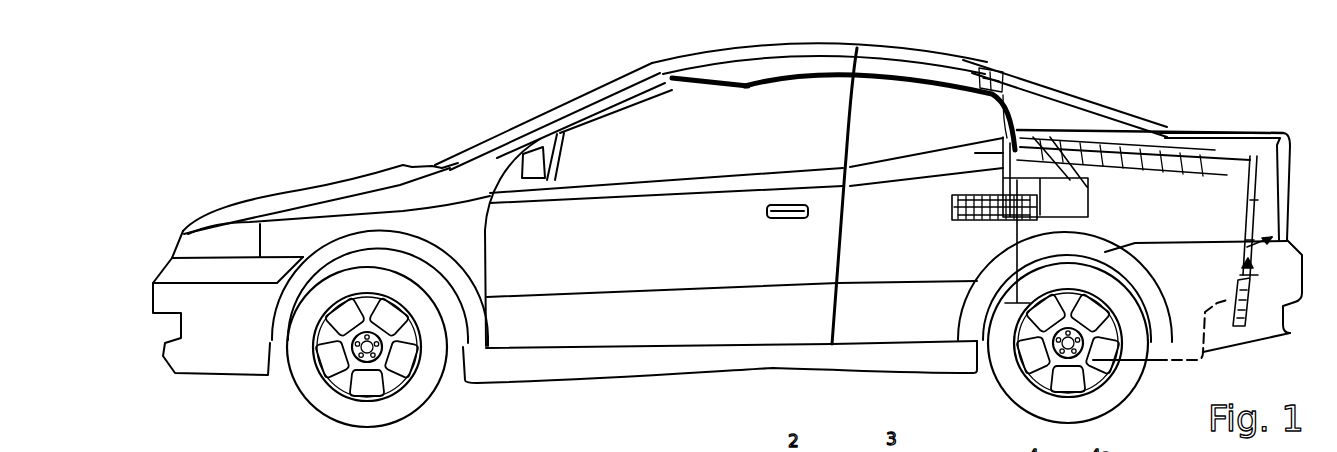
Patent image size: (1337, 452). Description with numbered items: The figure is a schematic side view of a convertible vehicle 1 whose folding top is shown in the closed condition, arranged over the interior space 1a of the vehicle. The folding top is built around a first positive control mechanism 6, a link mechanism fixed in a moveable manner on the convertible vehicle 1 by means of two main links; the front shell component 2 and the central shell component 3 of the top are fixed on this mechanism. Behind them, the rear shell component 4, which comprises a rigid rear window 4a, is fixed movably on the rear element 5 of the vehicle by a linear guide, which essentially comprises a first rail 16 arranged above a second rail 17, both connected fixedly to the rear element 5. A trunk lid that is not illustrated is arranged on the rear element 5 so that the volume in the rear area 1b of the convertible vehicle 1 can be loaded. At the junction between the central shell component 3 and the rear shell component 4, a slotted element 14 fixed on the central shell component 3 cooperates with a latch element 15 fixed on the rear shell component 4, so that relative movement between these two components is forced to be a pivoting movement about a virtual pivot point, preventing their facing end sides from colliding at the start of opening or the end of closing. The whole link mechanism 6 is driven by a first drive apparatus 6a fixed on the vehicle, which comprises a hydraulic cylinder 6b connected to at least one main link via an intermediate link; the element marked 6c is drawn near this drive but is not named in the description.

The convertible vehicle 1 is at (398, 143).
The interior space 1a is at (624, 158).
The rear area 1b is at (1226, 223).
The front shell component 2 is at (746, 82).
The central shell component 3 is at (897, 62).
The rear shell component 4 is at (1046, 108).
The rigid rear window 4a is at (1107, 111).
The rear element 5 is at (1275, 140).
The first positive control mechanism 6 is at (900, 95).
The first drive apparatus 6a is at (968, 233).
The hydraulic cylinder 6b is at (955, 222).
The guide element 6c is at (1084, 206).
The slotted element 14 is at (1008, 92).
The latch element 15 is at (1035, 65).
The first rail 16 is at (1212, 150).
The second rail 17 is at (1177, 157).